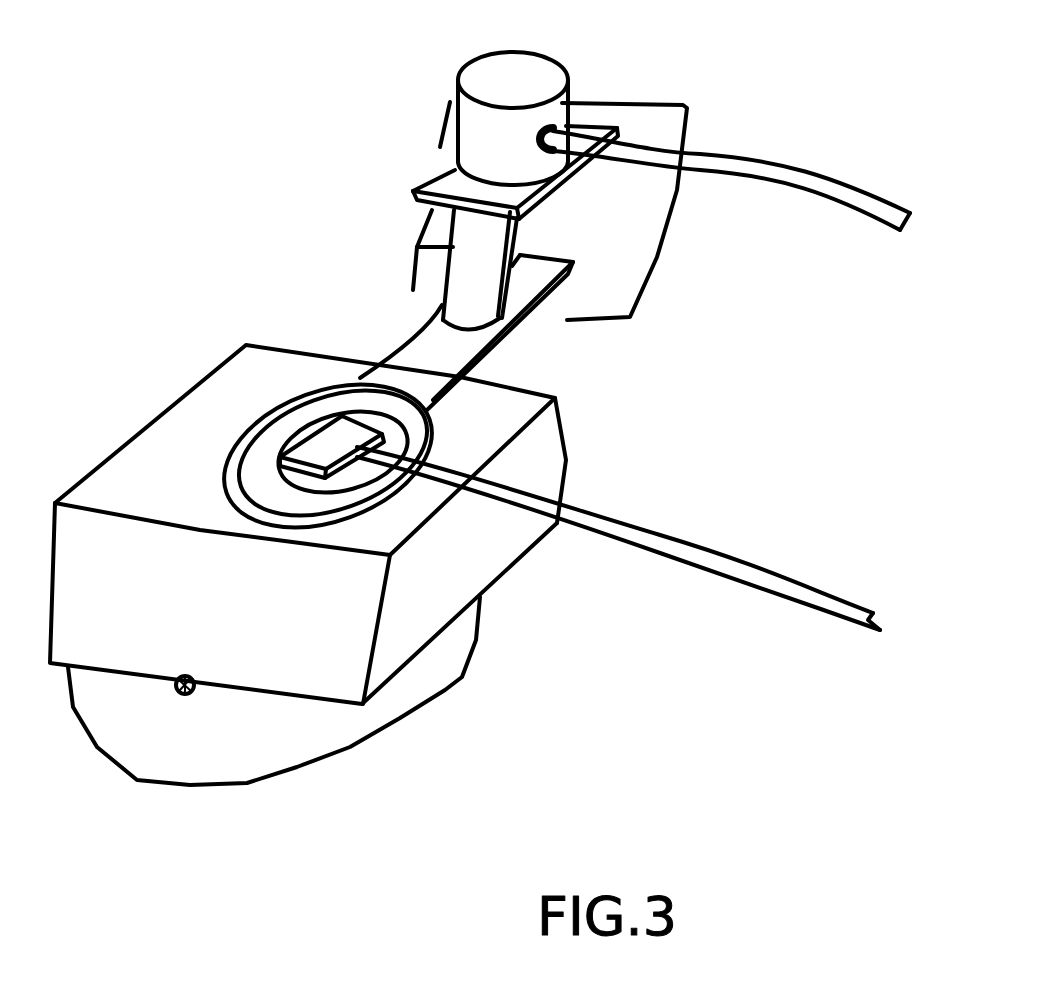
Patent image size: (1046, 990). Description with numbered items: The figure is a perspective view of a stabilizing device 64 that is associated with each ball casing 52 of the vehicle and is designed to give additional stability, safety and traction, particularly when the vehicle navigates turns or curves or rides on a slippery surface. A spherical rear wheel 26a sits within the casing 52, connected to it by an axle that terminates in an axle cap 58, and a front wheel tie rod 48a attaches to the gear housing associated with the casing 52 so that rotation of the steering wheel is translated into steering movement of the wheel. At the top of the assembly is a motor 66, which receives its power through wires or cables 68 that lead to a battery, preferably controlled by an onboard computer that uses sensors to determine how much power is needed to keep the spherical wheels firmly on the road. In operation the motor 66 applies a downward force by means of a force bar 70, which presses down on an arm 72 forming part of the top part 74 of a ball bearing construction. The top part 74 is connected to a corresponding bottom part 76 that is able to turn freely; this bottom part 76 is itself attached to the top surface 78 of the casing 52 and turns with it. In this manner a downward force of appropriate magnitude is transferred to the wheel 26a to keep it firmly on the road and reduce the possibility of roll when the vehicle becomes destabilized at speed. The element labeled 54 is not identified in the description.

The rear wheel 26a is at (274, 691).
The front wheel tie rod 48a is at (683, 545).
The ball casing 52 is at (308, 514).
The mounting block 54 is at (273, 446).
The axle cap 58 is at (190, 693).
The stabilizing device 64 is at (462, 211).
The motor 66 is at (513, 96).
The wires or cables 68 is at (725, 157).
The force bar 70 is at (420, 270).
The arm 72 is at (473, 358).
The top part of ball bearing construction 74 is at (473, 427).
The bottom part of ball bearing construction 76 is at (390, 490).
The top surface of ball casing 78 is at (387, 543).